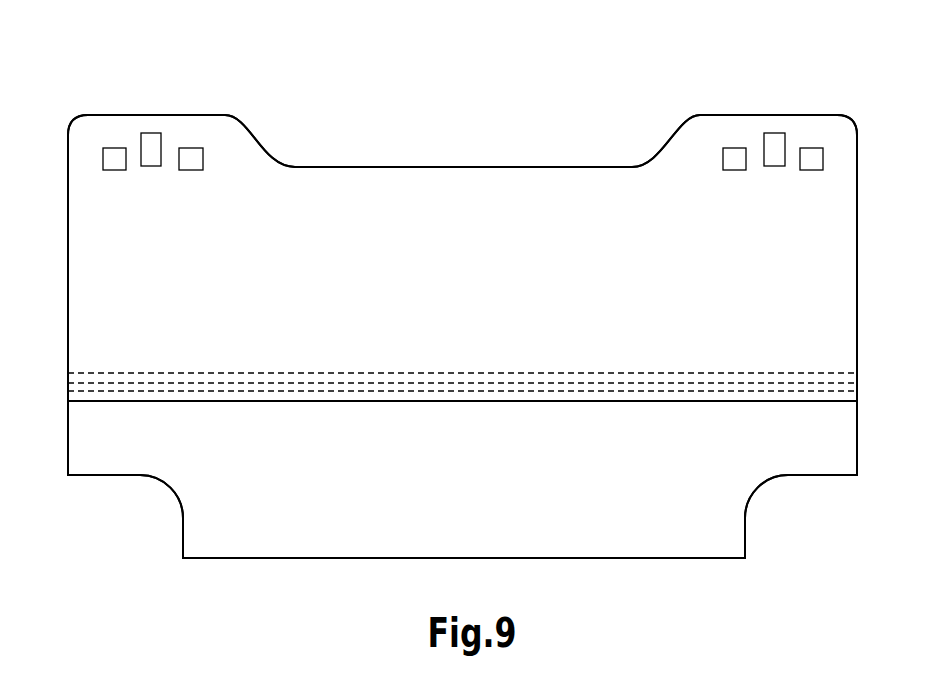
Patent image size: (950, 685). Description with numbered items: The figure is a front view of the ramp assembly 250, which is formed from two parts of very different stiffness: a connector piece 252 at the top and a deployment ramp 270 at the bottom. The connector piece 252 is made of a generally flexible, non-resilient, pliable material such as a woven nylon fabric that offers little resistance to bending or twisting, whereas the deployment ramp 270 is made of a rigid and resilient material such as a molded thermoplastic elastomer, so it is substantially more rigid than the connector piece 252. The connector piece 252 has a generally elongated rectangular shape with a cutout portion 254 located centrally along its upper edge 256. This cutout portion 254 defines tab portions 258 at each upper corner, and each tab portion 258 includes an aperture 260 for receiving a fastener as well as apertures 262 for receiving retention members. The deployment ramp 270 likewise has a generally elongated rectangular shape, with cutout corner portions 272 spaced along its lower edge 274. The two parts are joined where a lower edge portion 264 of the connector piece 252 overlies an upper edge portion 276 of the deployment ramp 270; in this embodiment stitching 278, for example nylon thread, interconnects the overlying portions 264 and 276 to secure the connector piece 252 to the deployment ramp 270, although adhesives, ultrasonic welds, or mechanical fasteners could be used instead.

The ramp assembly 250 is at (92, 88).
The connector piece 252 is at (467, 222).
The cutout portion 254 is at (396, 165).
The upper edge 256 is at (733, 113).
The tab portions 258 is at (105, 130).
The apertures 260 is at (155, 140).
The apertures 262 is at (193, 157).
The lower edge portion 264 is at (202, 400).
The deployment ramp 270 is at (589, 505).
The cutout corner portions 272 is at (108, 476).
The lower edge 274 is at (278, 558).
The upper edge portion 276 is at (143, 378).
The stitching 278 is at (347, 385).